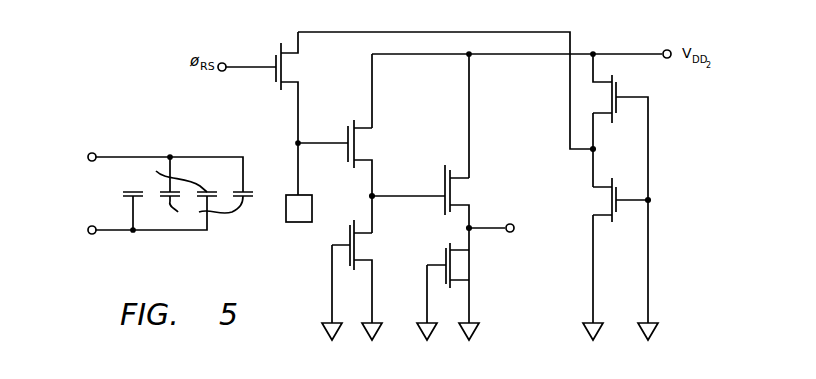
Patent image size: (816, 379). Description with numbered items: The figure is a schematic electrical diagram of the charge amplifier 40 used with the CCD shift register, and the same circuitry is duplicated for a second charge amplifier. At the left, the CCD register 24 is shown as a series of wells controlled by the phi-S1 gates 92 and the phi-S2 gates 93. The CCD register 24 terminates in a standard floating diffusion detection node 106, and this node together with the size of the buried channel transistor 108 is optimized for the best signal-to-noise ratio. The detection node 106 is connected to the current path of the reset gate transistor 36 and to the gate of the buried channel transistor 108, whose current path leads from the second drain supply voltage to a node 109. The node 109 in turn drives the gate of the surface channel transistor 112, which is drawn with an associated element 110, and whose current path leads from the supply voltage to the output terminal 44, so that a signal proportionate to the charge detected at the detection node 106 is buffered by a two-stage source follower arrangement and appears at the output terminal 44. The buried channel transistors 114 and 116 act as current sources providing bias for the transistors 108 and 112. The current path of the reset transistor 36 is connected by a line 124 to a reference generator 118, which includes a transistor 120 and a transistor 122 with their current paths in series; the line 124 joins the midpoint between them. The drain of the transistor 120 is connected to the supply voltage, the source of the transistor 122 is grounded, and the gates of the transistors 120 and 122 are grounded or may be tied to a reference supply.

The CCD register 24 is at (124, 120).
The reset gate transistor 36 is at (281, 43).
The charge amplifier 40 is at (679, 243).
The output terminal 44 is at (513, 232).
The phi-S1 gates 92 is at (206, 209).
The phi-S2 gates 93 is at (133, 192).
The floating diffusion detection node 106 is at (304, 223).
The buried channel transistor 108 is at (350, 121).
The node 109 is at (374, 194).
The transistor 110 is at (471, 176).
The surface channel transistor 112 is at (447, 171).
The buried channel transistor 114 is at (352, 226).
The buried channel transistor 116 is at (446, 256).
The reference generator 118 is at (668, 151).
The transistor 120 is at (619, 92).
The transistor 122 is at (612, 219).
The line 124 is at (481, 32).